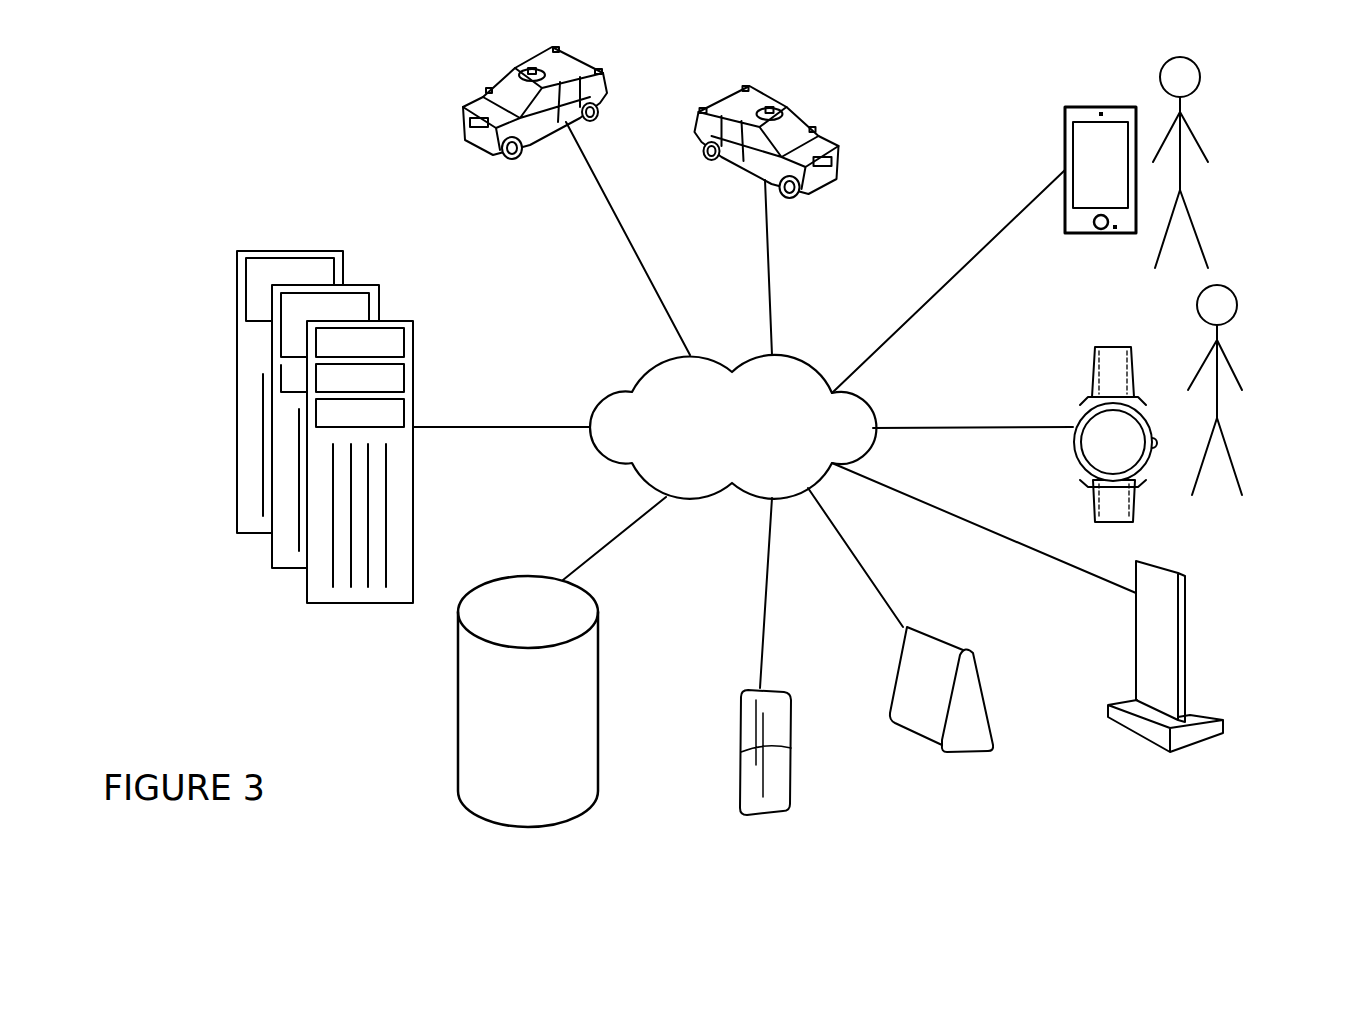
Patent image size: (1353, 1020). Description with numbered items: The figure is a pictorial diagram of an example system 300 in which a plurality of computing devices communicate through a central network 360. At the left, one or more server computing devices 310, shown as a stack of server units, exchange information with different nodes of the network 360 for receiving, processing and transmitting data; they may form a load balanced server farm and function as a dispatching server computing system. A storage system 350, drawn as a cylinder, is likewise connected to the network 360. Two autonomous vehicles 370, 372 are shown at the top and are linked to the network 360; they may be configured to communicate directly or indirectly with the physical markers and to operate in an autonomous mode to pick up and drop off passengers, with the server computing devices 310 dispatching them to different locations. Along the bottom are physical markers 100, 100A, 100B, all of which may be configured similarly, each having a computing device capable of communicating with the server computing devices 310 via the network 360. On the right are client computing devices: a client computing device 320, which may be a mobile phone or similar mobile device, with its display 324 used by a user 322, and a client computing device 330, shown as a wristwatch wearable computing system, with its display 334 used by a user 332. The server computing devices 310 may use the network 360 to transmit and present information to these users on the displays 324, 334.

The system 300 is at (165, 745).
The server computing devices 310 is at (414, 367).
The client computing device 320 is at (1053, 181).
The user 322 is at (1182, 173).
The display 324 is at (1068, 118).
The client computing device 330 is at (1076, 445).
The user 332 is at (1218, 402).
The display 334 is at (1150, 462).
The storage system 350 is at (598, 710).
The network 360 is at (598, 452).
The autonomous vehicle 370 is at (457, 130).
The autonomous vehicle 372 is at (842, 160).
The physical marker 100 is at (793, 808).
The physical marker 100A is at (983, 680).
The physical marker 100B is at (1188, 628).